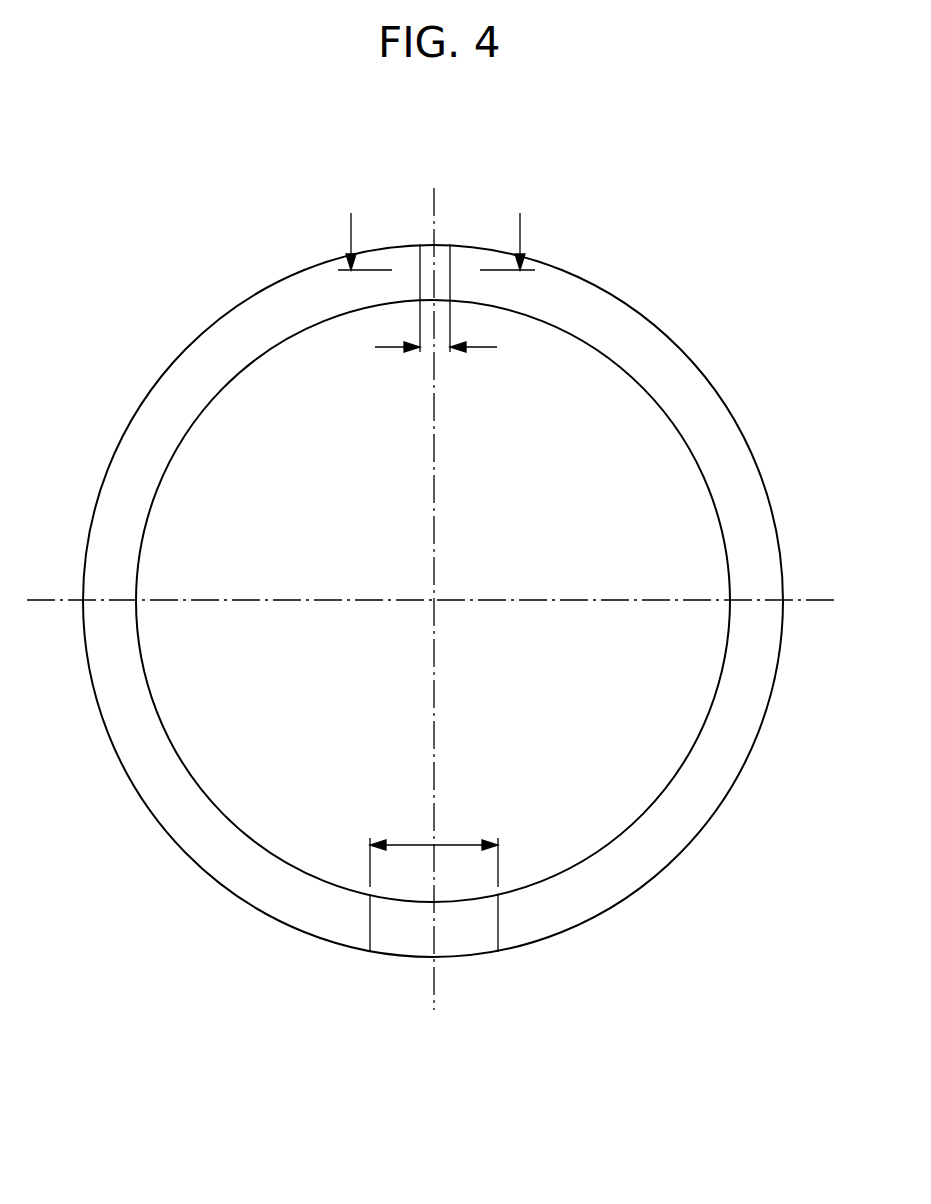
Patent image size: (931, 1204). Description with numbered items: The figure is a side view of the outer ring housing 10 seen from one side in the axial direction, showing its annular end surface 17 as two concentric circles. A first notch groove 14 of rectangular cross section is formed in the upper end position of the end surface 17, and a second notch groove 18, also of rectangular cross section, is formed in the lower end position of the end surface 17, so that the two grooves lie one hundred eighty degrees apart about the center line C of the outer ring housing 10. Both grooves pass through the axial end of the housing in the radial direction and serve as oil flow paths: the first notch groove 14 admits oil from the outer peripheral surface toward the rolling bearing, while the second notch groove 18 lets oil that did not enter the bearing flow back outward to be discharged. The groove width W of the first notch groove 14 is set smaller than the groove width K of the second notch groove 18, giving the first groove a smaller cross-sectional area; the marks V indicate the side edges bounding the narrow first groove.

The outer ring housing 10 is at (661, 325).
The first notch groove 14 is at (440, 265).
The end surface 17 is at (698, 395).
The second notch groove 18 is at (465, 937).
The center line C is at (433, 600).
The slit side edges V is at (436, 226).
The groove width W is at (440, 360).
The groove width K is at (434, 852).